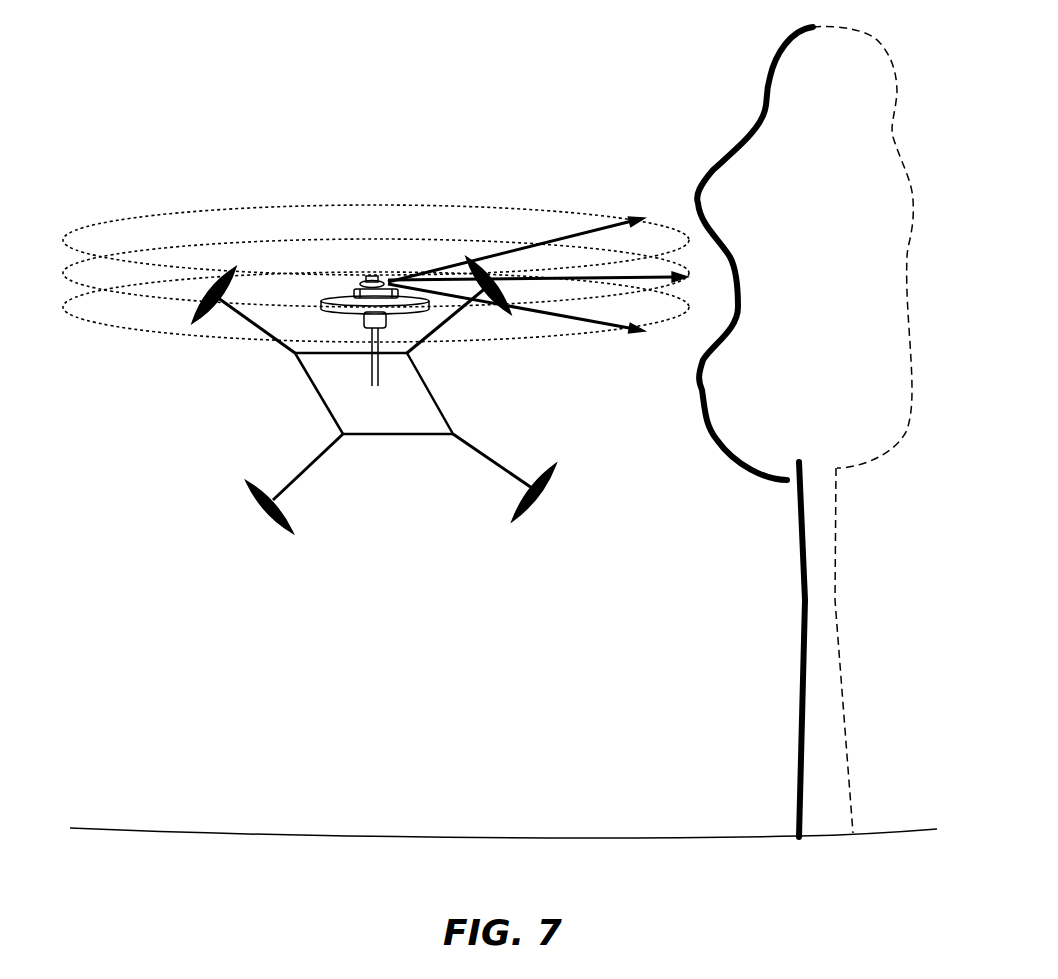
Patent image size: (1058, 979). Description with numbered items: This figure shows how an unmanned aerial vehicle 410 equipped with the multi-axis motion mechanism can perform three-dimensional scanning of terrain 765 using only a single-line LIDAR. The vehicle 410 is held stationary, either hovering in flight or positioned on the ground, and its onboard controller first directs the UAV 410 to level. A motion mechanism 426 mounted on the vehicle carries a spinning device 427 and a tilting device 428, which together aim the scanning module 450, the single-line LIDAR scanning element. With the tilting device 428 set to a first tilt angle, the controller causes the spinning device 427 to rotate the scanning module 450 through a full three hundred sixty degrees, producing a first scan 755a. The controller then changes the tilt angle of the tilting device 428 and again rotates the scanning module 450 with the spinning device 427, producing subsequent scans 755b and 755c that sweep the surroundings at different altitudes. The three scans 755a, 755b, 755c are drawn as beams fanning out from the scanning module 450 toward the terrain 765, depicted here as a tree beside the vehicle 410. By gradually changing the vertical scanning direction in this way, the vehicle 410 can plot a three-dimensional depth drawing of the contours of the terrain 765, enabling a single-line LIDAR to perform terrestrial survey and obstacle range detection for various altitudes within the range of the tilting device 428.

The vehicle 410 is at (372, 370).
The motion mechanism 426 is at (350, 344).
The spinning device 427 is at (372, 330).
The tilting device 428 is at (360, 288).
The scanning module 450 is at (375, 266).
The first scan 755a is at (548, 273).
The scan 755b is at (600, 228).
The scan 755c is at (563, 317).
The terrain 765 is at (767, 664).